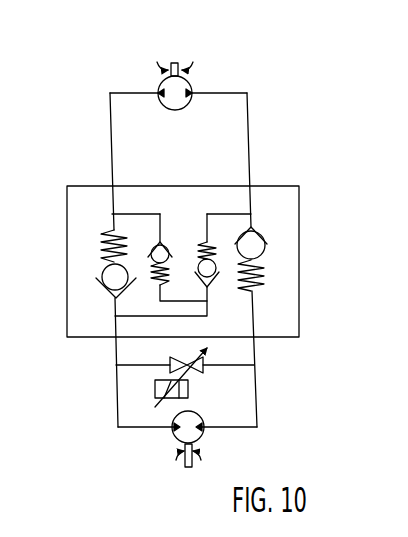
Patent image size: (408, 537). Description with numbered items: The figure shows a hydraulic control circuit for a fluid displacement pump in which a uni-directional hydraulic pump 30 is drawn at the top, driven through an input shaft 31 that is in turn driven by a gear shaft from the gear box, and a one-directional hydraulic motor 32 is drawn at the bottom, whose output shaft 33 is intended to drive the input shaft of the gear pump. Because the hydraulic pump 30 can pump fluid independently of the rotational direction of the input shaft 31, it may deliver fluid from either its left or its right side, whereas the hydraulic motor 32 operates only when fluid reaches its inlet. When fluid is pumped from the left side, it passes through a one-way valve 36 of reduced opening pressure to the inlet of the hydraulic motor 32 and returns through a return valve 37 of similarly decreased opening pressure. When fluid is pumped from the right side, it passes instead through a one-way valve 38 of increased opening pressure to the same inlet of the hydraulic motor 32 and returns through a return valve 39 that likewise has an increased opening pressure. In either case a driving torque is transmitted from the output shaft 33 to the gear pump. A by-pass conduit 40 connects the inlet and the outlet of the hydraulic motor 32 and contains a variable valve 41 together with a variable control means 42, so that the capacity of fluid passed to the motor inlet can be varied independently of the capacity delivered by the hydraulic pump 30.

The hydraulic pump 30 is at (192, 78).
The input shaft 31 is at (172, 62).
The hydraulic motor 32 is at (210, 437).
The output shaft 33 is at (182, 466).
The one-way valve 36 is at (166, 238).
The return valve 37 is at (197, 238).
The one-way valve 38 is at (266, 229).
The return valve 39 is at (93, 226).
The by-pass conduit 40 is at (245, 365).
The variable valve 41 is at (212, 373).
The variable control means 42 is at (152, 388).